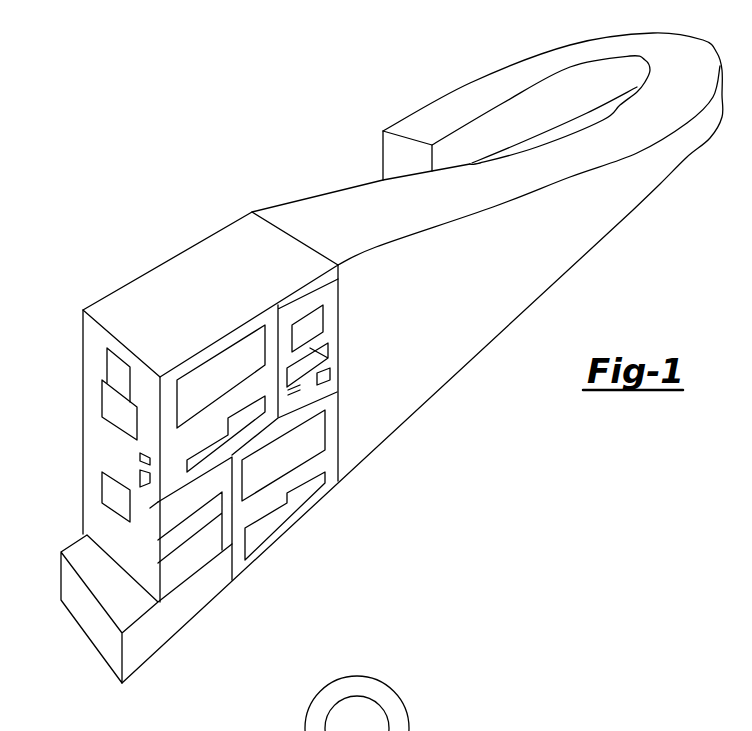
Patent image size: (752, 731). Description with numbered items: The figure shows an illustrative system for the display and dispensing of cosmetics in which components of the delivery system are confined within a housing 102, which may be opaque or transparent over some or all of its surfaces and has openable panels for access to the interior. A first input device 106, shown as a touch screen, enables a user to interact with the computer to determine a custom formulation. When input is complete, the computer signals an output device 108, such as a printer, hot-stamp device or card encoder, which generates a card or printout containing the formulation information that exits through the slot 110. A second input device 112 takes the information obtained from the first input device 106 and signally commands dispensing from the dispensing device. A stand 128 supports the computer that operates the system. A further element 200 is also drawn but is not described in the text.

The housing 102 is at (183, 288).
The first input device 106 is at (102, 398).
The output device 108 is at (330, 367).
The slot 110 is at (297, 397).
The second input device 112 is at (340, 308).
The stand 128 is at (107, 362).
The second device 200 is at (647, 730).